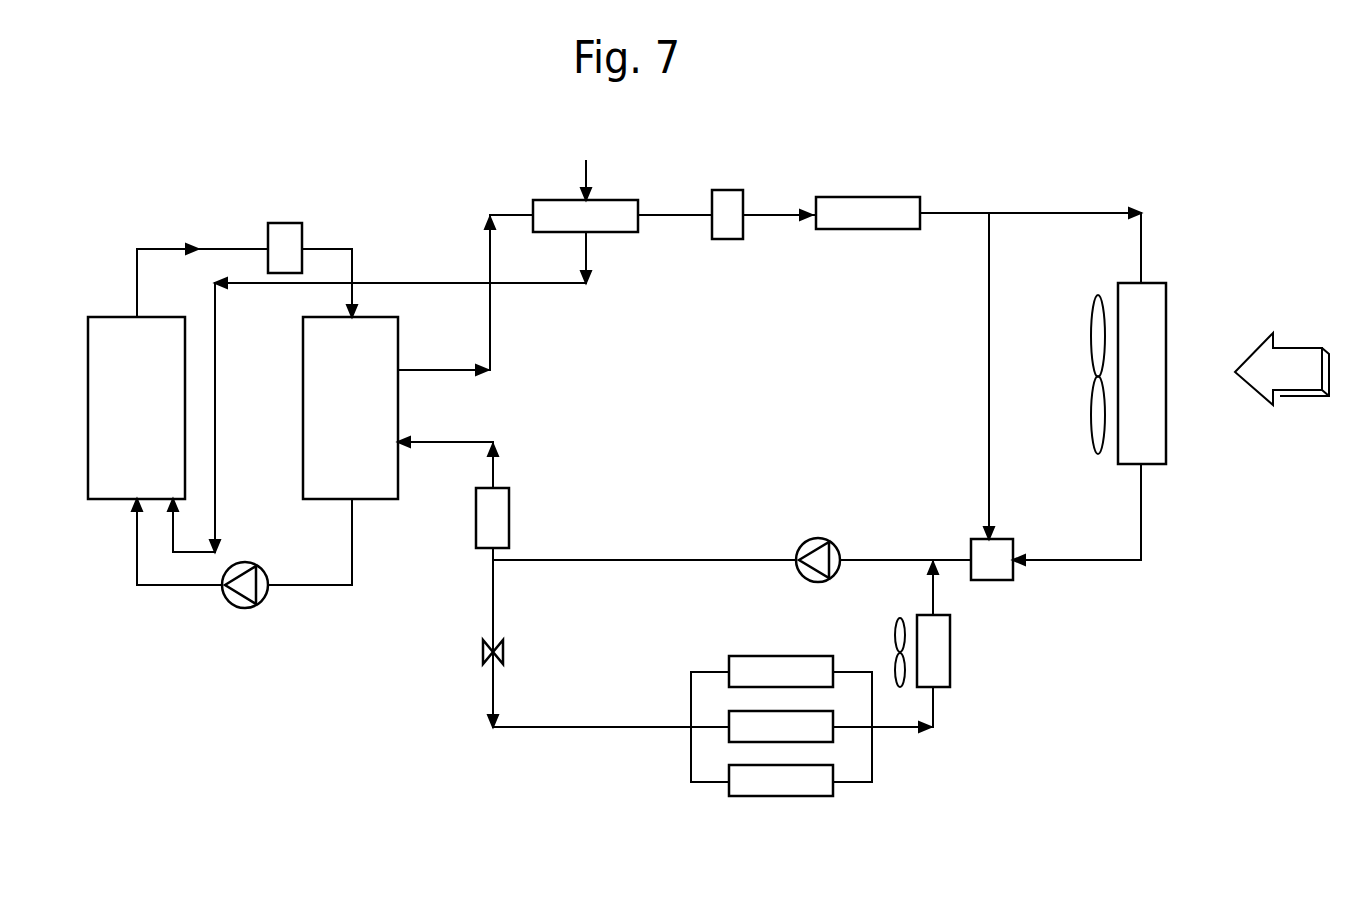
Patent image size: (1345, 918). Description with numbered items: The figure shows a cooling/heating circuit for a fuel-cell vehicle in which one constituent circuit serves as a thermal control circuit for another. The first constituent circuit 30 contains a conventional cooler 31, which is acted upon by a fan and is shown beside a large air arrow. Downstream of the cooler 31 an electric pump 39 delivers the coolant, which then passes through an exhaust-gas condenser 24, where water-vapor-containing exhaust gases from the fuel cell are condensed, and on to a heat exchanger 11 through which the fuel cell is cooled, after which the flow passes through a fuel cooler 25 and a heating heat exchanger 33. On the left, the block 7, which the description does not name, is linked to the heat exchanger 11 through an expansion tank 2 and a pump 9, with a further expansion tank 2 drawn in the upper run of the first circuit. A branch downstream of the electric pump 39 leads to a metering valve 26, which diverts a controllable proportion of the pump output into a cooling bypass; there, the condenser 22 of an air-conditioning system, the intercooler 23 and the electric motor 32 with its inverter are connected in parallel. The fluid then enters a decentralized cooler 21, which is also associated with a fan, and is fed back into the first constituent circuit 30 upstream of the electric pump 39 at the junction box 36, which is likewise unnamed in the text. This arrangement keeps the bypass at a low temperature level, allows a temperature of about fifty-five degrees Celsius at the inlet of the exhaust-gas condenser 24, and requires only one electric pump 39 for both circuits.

The expansion tank 2 is at (282, 224).
The fuel cell 7 is at (90, 405).
The pump 9 is at (262, 600).
The heat exchanger 11 is at (388, 492).
The decentralized cooler 21 is at (945, 670).
The condenser of an air-conditioning system 22 is at (780, 657).
The intercooler 23 is at (735, 733).
The exhaust-gas condenser 24 is at (503, 517).
The fuel cooler 25 is at (620, 200).
The metering valve 26 is at (503, 652).
The first constituent circuit 30 is at (1016, 183).
The cooler 31 is at (1160, 345).
The electric motor 32 is at (781, 797).
The heating heat exchanger 33 is at (868, 198).
The mixing valve 36 is at (993, 575).
The electric pump 39 is at (827, 538).